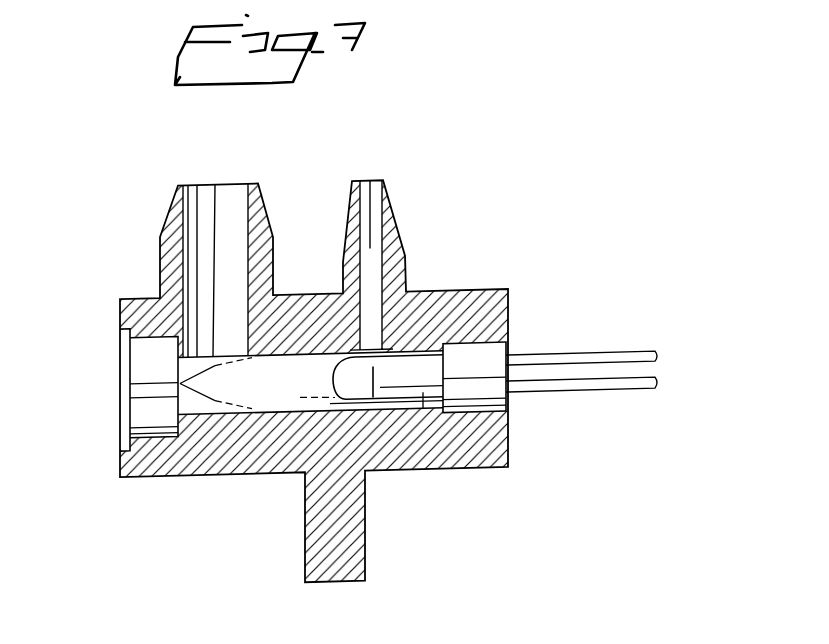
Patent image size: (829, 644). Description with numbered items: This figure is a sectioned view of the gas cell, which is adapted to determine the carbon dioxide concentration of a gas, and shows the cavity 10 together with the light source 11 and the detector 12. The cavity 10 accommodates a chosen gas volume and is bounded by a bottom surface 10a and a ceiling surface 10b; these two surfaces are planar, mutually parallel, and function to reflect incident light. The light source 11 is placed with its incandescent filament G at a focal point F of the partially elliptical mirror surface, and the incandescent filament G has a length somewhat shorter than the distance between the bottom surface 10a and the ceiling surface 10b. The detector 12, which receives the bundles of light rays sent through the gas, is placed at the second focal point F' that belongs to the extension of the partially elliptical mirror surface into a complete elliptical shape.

The cavity 10 is at (289, 396).
The bottom surface 10a is at (283, 413).
The ceiling surface 10b is at (302, 352).
The light source 11 is at (423, 398).
The detector 12 is at (158, 358).
The incandescent filament G is at (433, 320).
The focal point F is at (395, 441).
The second focal point F' is at (200, 384).